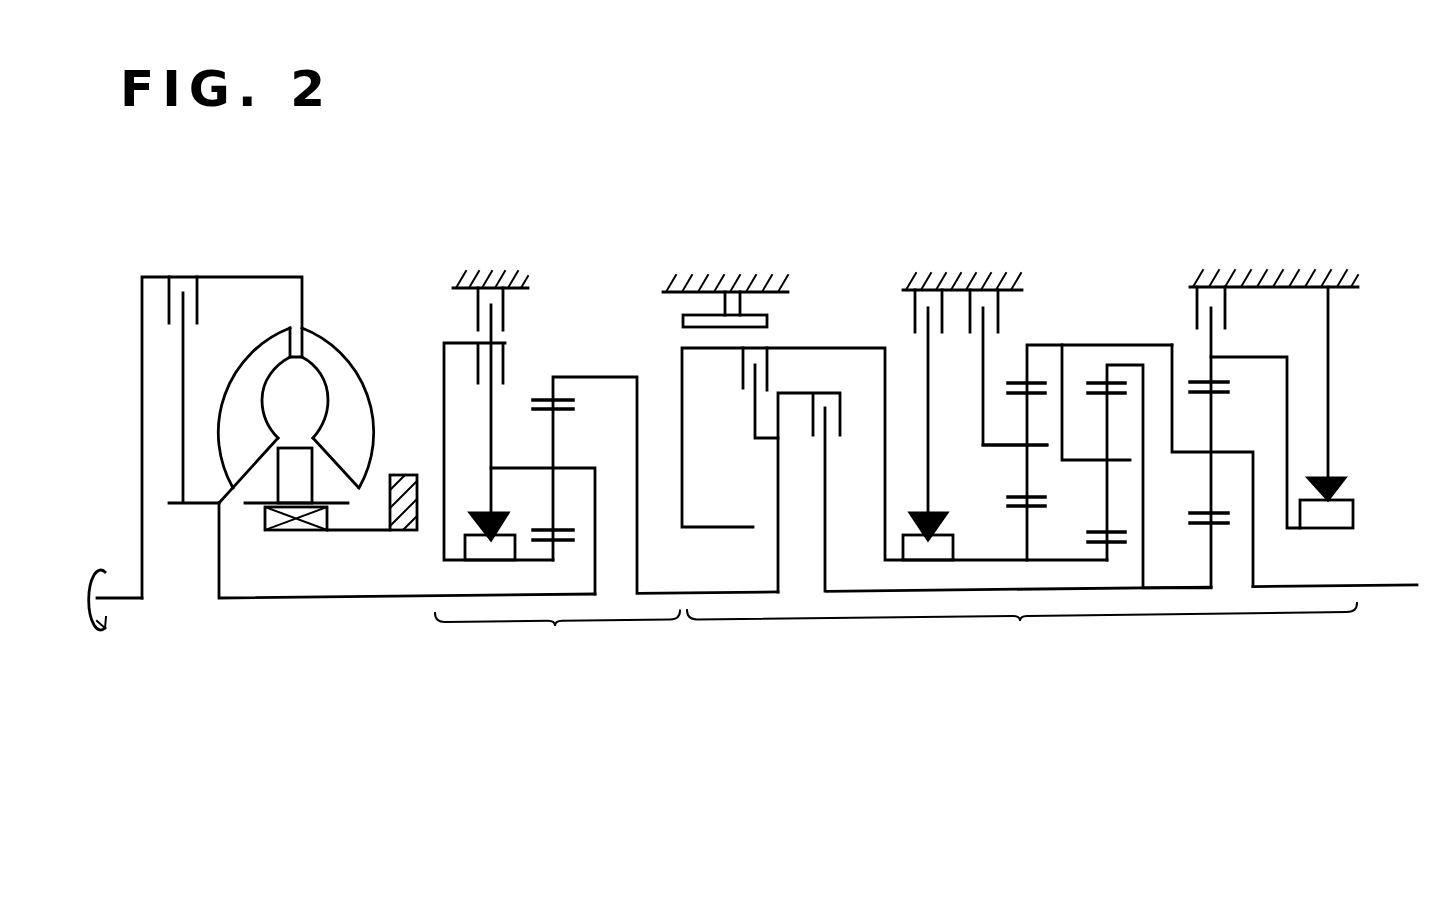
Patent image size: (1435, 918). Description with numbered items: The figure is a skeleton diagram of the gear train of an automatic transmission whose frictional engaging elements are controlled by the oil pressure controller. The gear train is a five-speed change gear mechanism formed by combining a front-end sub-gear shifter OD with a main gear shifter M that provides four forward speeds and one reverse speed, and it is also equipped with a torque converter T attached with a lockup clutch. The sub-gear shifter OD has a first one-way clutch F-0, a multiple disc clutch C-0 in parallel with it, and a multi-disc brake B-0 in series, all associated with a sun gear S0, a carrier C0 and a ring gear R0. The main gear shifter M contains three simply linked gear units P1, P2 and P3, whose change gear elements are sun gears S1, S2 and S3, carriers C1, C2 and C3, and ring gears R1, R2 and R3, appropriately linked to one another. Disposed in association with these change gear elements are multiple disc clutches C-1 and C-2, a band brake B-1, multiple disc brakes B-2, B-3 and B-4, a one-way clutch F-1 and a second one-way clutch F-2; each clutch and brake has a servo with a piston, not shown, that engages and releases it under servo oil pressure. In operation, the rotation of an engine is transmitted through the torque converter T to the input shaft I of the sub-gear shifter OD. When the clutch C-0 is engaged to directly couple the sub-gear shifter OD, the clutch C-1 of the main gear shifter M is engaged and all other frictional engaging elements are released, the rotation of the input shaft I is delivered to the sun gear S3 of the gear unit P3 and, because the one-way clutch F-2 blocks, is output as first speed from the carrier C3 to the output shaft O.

The torque converter T is at (241, 273).
The input shaft I is at (417, 597).
The multi-disc brake B-0 is at (503, 294).
The multiple disc clutch C-0 is at (505, 357).
The first one-way clutch F-0 is at (498, 548).
The carrier C0 is at (572, 468).
The ring gear R0 is at (560, 395).
The sun gear S0 is at (537, 540).
The band brake B-1 is at (747, 312).
The multiple disc clutch C-2 is at (740, 387).
The multiple disc clutch C-1 is at (842, 413).
The multiple disc brake B-2 is at (915, 310).
The multiple disc brake B-3 is at (1010, 292).
The one-way clutch F-1 is at (922, 548).
The gear unit P1 is at (1057, 298).
The ring gear R1 is at (1017, 383).
The sun gear S1 is at (1022, 510).
The carrier C1 is at (1005, 447).
The gear unit P2 is at (1110, 299).
The ring gear R2 is at (1098, 383).
The sun gear S2 is at (1095, 548).
The carrier C2 is at (1078, 463).
The multiple disc brake B-4 is at (1228, 298).
The gear unit P3 is at (1182, 314).
The ring gear R3 is at (1218, 378).
The sun gear S3 is at (1202, 523).
The carrier C3 is at (1233, 452).
The second one-way clutch F-2 is at (1323, 515).
The output shaft O is at (1378, 588).
The sub-gear shifter OD is at (557, 636).
The main gear shifter M is at (1022, 630).